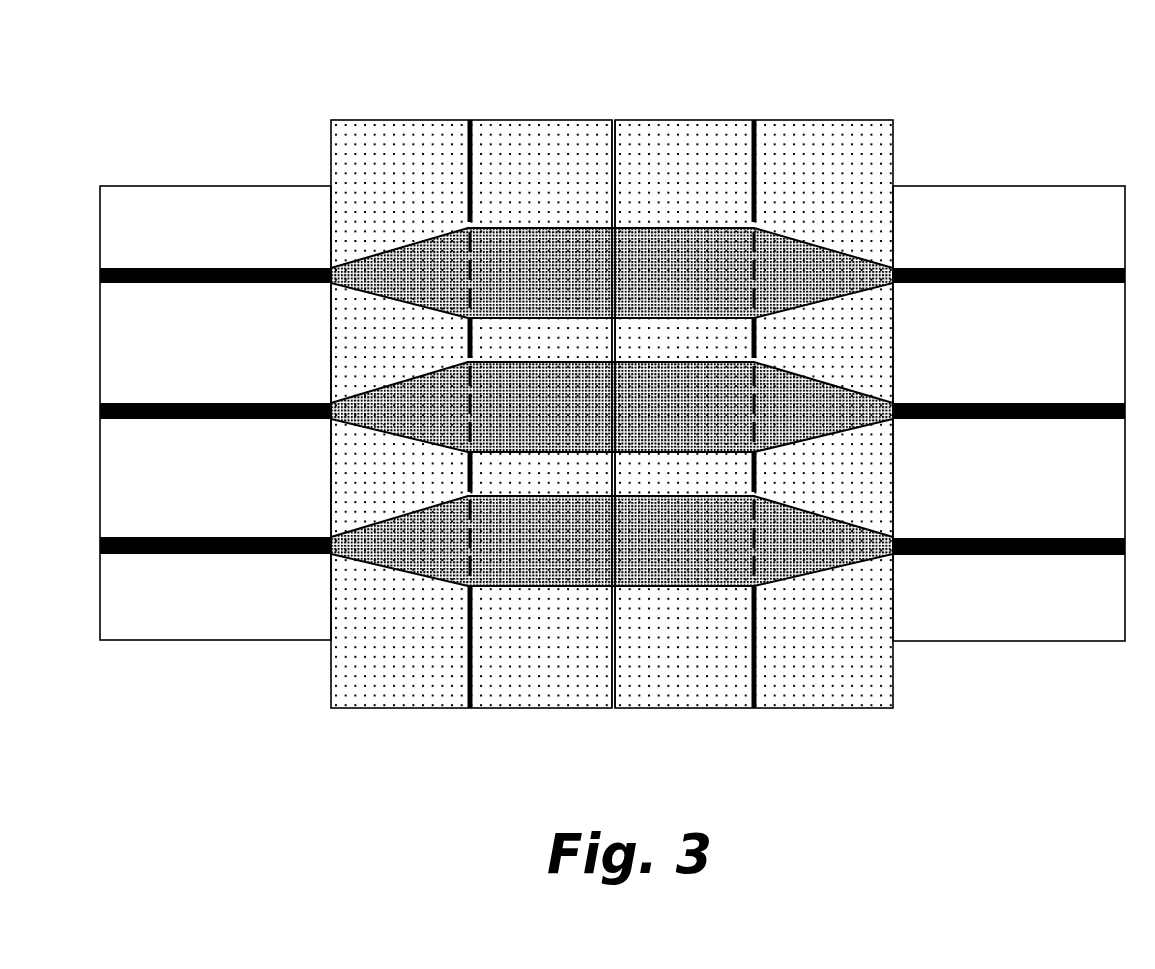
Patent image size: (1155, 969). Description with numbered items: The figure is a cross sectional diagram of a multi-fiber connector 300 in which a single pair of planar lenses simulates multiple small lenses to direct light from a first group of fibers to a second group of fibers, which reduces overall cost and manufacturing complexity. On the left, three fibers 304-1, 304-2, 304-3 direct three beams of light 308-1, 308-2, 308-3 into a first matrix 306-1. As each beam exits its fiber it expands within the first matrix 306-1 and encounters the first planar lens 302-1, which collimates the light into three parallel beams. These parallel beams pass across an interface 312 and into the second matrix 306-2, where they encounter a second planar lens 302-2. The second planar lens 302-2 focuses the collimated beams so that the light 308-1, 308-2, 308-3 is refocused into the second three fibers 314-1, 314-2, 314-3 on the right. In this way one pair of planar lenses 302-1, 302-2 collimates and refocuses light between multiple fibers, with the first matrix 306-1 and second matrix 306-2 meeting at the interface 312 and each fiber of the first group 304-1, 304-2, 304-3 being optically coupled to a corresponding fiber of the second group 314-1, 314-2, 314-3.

The multi-fiber connector 300 is at (140, 73).
The first planar lens 302-1 is at (470, 708).
The second planar lens 302-2 is at (754, 708).
The first fiber of first group 304-1 is at (178, 256).
The second fiber of first group 304-2 is at (178, 390).
The third fiber of first group 304-3 is at (178, 522).
The first matrix 306-1 is at (420, 678).
The second matrix 306-2 is at (860, 678).
The first beam of light 308-1 is at (612, 273).
The second beam of light 308-2 is at (612, 407).
The third beam of light 308-3 is at (612, 541).
The interface 312 is at (613, 708).
The first fiber of second group 314-1 is at (1108, 256).
The second fiber of second group 314-2 is at (1108, 390).
The third fiber of second group 314-3 is at (1108, 530).